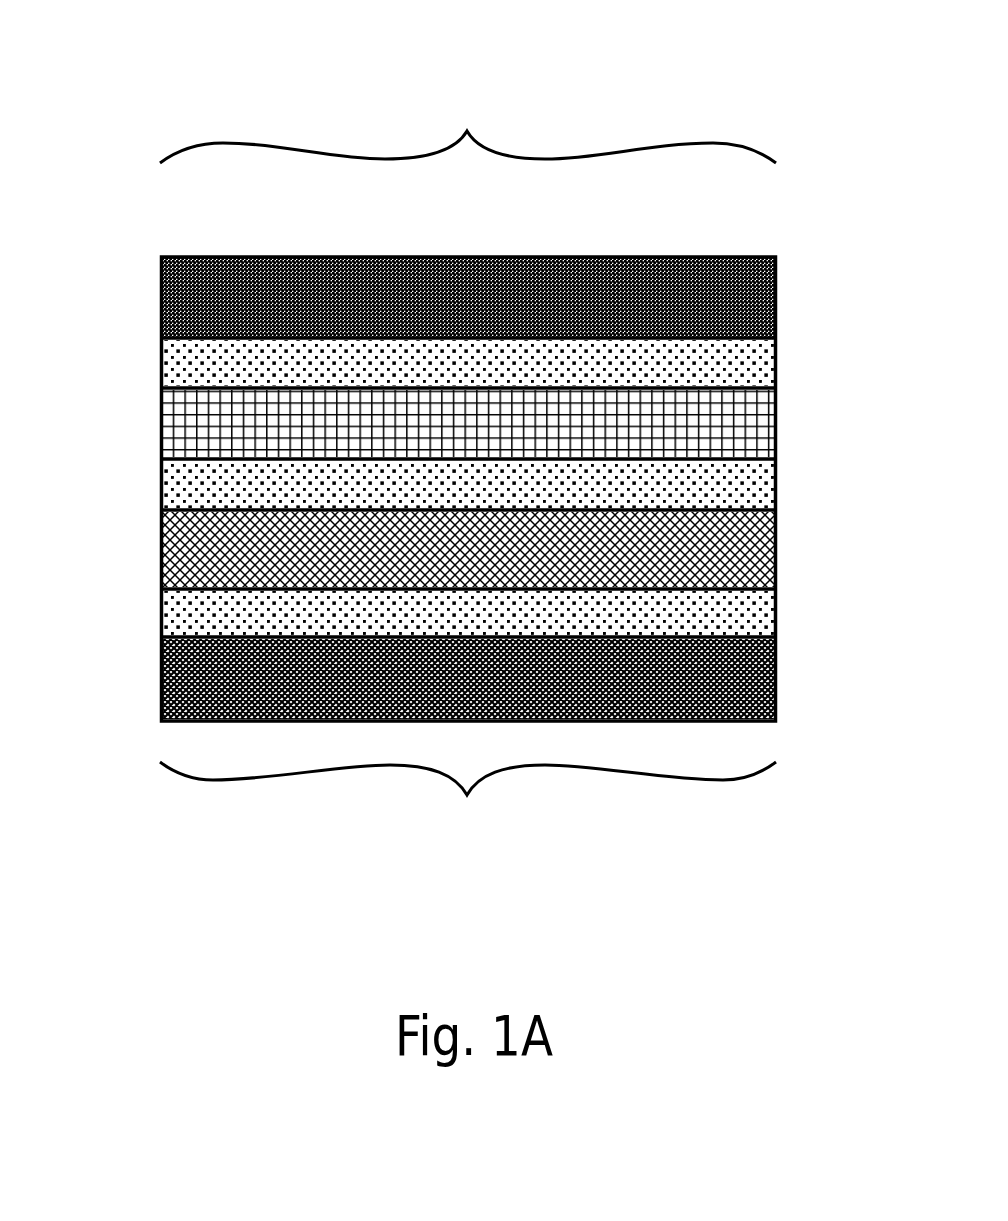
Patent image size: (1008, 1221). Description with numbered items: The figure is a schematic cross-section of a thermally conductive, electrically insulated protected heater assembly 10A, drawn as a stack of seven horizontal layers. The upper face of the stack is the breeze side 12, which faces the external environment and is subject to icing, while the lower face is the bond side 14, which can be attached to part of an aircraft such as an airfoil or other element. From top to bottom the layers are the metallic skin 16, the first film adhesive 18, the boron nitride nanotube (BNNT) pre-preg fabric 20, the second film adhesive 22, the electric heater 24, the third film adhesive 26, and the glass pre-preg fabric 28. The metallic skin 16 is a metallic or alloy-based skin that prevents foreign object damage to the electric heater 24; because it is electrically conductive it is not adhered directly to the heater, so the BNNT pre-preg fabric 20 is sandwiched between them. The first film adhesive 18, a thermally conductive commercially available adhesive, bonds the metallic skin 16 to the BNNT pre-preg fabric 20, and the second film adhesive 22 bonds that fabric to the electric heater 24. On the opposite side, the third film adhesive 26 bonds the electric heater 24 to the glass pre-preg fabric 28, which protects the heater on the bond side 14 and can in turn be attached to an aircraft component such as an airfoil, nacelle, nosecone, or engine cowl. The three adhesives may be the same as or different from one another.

The thermally conductive, electrically insulated protected heater assembly 10A is at (141, 121).
The breeze side 12 is at (468, 128).
The bond side 14 is at (468, 796).
The metallic skin 16 is at (776, 300).
The first film adhesive 18 is at (776, 362).
The boron nitride nanotube (BNNT) pre-preg fabric 20 is at (776, 423).
The second film adhesive 22 is at (776, 480).
The electric heater 24 is at (776, 547).
The third film adhesive 26 is at (776, 612).
The glass pre-preg fabric 28 is at (776, 673).